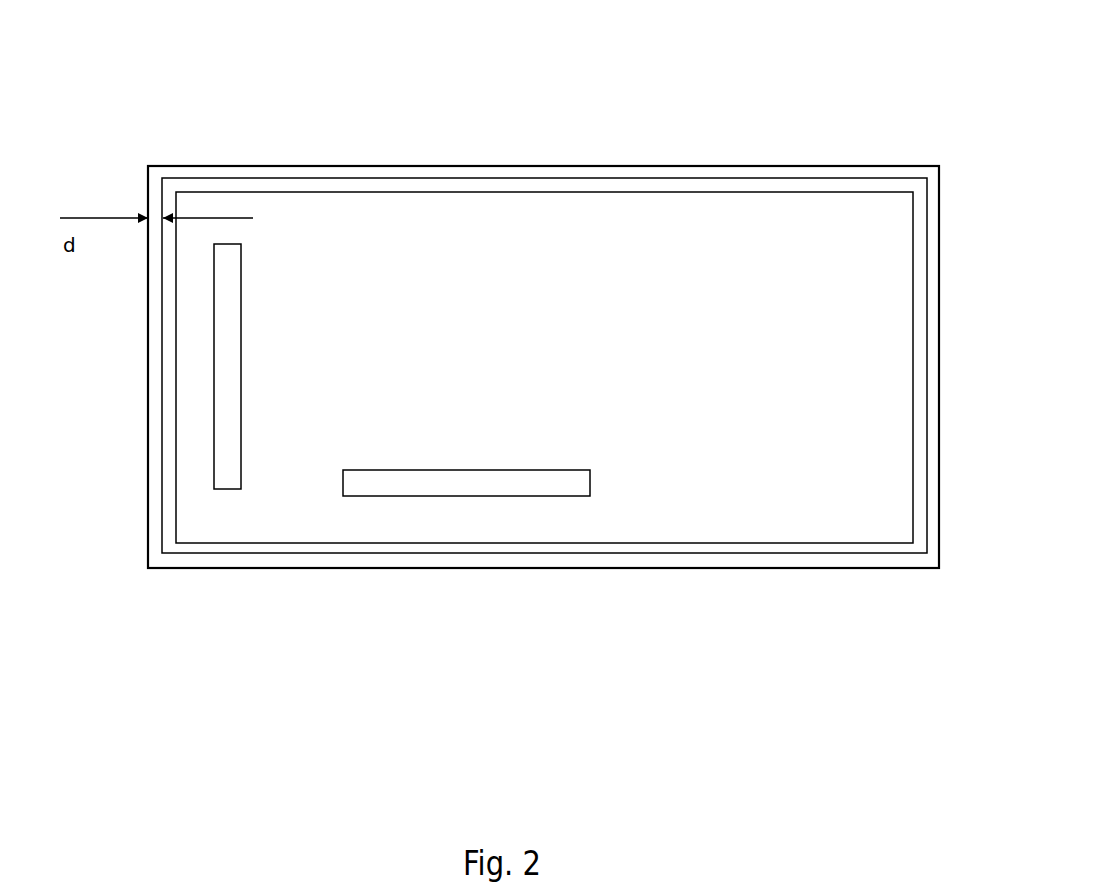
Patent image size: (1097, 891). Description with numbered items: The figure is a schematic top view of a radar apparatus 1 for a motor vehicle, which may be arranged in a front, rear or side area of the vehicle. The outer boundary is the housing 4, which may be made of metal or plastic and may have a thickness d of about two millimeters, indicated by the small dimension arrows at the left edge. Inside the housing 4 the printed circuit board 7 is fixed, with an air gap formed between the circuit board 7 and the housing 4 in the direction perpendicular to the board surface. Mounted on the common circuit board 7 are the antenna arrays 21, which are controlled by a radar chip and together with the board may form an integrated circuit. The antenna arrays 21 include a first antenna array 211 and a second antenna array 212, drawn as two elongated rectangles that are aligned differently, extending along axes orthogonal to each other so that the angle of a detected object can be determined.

The radar apparatus 1 is at (543, 363).
The housing 4 is at (223, 166).
The circuit board 7 is at (443, 208).
The antenna arrays 21 is at (386, 474).
The first antenna array 211 is at (230, 472).
The second antenna array 212 is at (394, 490).